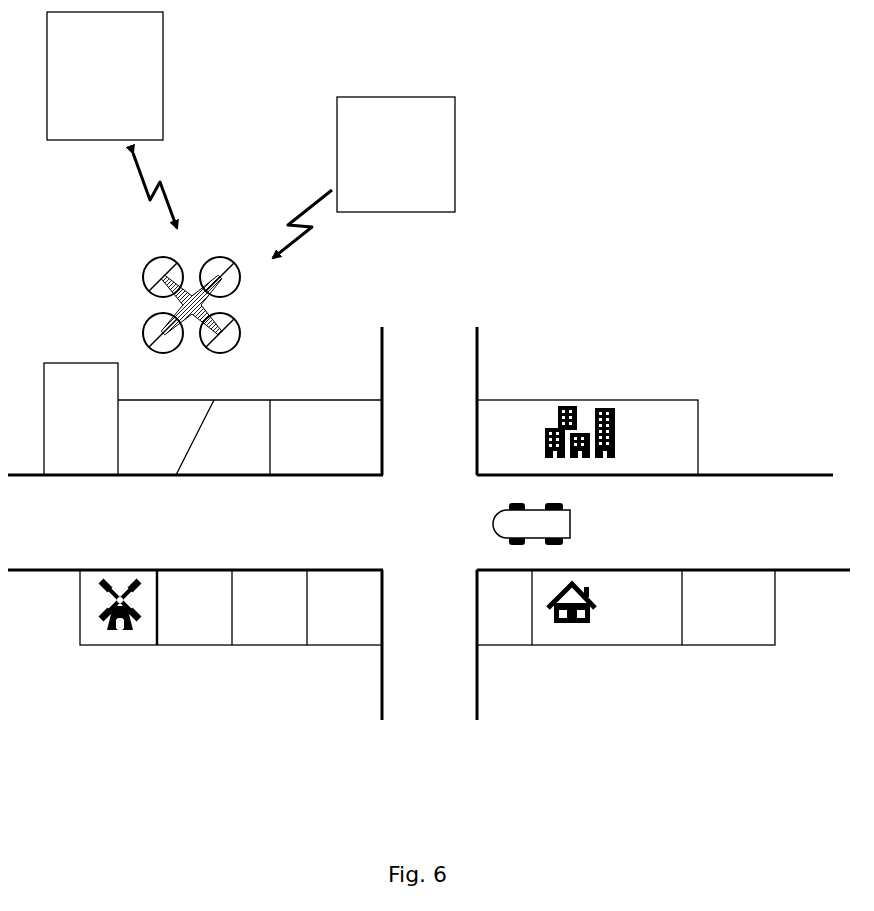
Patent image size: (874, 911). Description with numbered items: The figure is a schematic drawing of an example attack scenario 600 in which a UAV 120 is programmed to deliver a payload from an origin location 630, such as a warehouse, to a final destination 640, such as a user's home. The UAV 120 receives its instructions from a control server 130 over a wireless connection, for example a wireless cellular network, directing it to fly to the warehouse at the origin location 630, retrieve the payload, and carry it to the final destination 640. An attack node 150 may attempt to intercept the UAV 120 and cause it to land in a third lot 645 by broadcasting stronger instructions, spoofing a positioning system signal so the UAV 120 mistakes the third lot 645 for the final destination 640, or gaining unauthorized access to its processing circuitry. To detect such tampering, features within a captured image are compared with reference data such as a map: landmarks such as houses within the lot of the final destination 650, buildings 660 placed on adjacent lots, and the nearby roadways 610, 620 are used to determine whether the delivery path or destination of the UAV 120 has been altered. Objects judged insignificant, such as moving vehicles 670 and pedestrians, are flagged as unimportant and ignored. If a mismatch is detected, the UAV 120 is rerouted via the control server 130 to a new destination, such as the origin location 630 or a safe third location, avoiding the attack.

The attack scenario 600 is at (676, 105).
The control server 130 is at (125, 114).
The attack node 150 is at (415, 199).
The UAV 120 is at (225, 305).
The roadway 610 is at (449, 421).
The roadway 620 is at (106, 536).
The origin location 630 is at (99, 432).
The final destination 640 is at (665, 617).
The third lot 645 is at (212, 617).
The lot of final destination 650 is at (588, 630).
The buildings 660 is at (598, 400).
The moving vehicles 670 is at (571, 530).